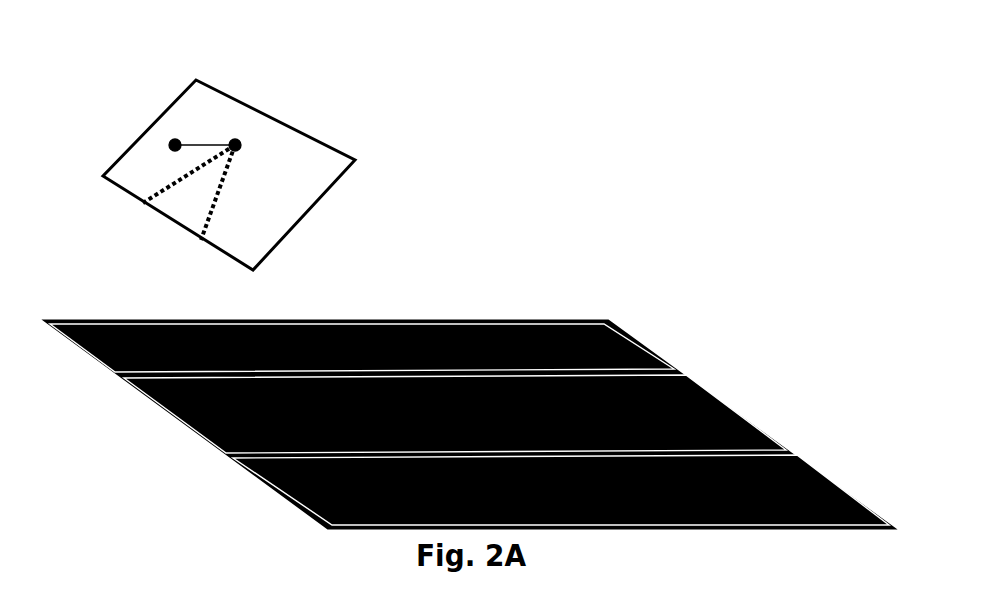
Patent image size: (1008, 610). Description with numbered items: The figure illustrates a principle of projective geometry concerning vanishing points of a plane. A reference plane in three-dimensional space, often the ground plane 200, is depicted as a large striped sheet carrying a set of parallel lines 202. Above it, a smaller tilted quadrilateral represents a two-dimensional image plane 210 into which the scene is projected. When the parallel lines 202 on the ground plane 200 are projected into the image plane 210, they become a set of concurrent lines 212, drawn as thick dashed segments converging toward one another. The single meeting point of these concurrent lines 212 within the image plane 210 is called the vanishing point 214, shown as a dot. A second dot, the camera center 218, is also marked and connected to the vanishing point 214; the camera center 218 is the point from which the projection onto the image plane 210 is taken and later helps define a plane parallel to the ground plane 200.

The ground plane 200 is at (545, 311).
The set of parallel lines 202 is at (713, 418).
The image plane 210 is at (320, 185).
The set of concurrent lines 212 is at (186, 214).
The vanishing point 214 is at (236, 118).
The camera center 218 is at (152, 124).